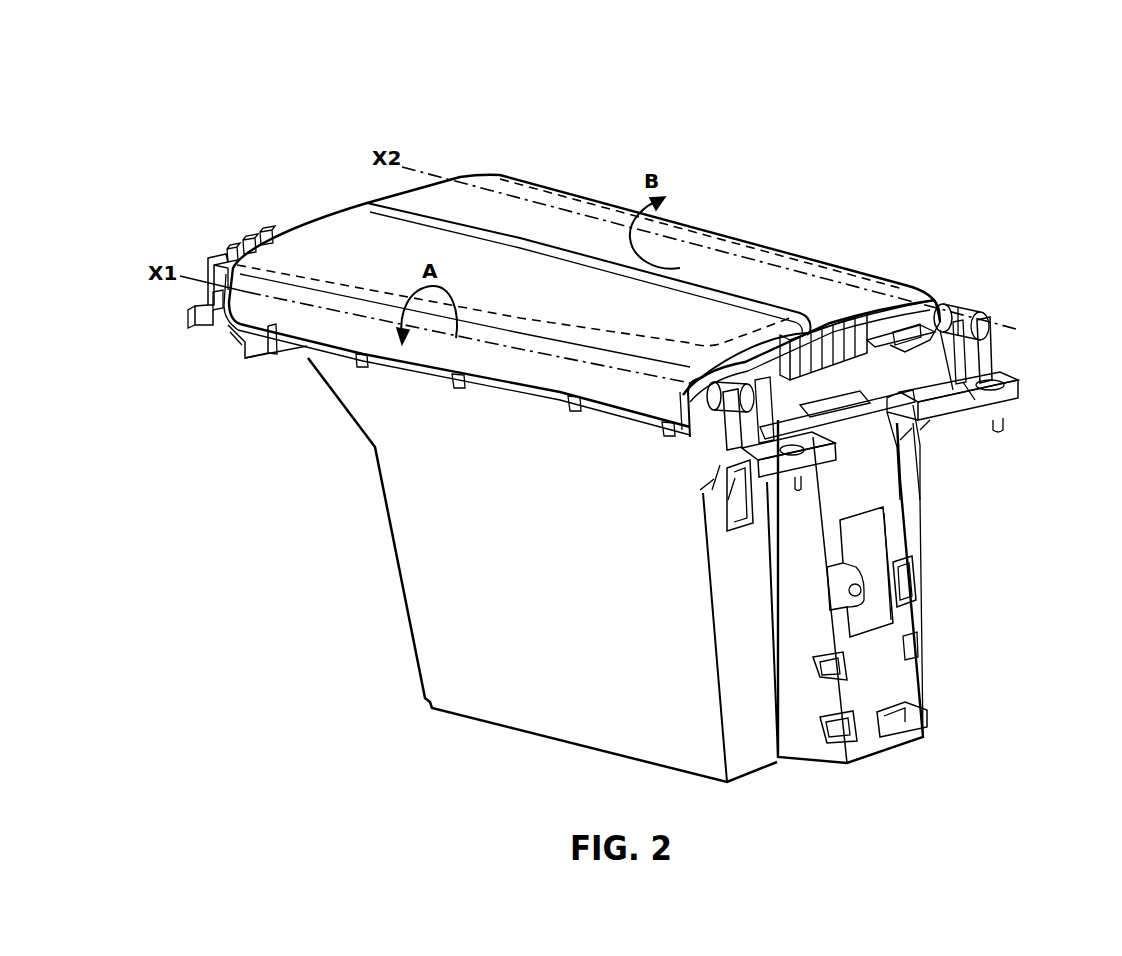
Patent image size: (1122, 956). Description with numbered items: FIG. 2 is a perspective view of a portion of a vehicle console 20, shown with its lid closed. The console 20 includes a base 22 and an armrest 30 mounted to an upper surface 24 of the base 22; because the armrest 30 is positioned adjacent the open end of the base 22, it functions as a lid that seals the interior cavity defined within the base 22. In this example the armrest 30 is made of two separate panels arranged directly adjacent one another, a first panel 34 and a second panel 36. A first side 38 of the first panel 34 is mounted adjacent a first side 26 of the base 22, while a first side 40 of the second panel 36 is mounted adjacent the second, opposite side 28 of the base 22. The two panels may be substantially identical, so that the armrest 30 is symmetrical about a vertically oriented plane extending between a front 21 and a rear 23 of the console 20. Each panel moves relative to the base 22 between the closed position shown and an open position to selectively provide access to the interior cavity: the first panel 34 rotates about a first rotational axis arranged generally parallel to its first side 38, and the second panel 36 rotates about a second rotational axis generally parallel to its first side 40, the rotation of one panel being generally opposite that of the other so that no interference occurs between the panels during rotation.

The console 20 is at (338, 131).
The front 21 is at (284, 240).
The base 22 is at (374, 493).
The rear 23 is at (985, 320).
The upper surface 24 is at (307, 337).
The first side 26 is at (478, 646).
The second side 28 is at (925, 522).
The armrest 30 is at (806, 216).
The first panel 34 is at (320, 244).
The second panel 36 is at (592, 234).
The first side 38 is at (612, 395).
The first side 40 is at (884, 270).